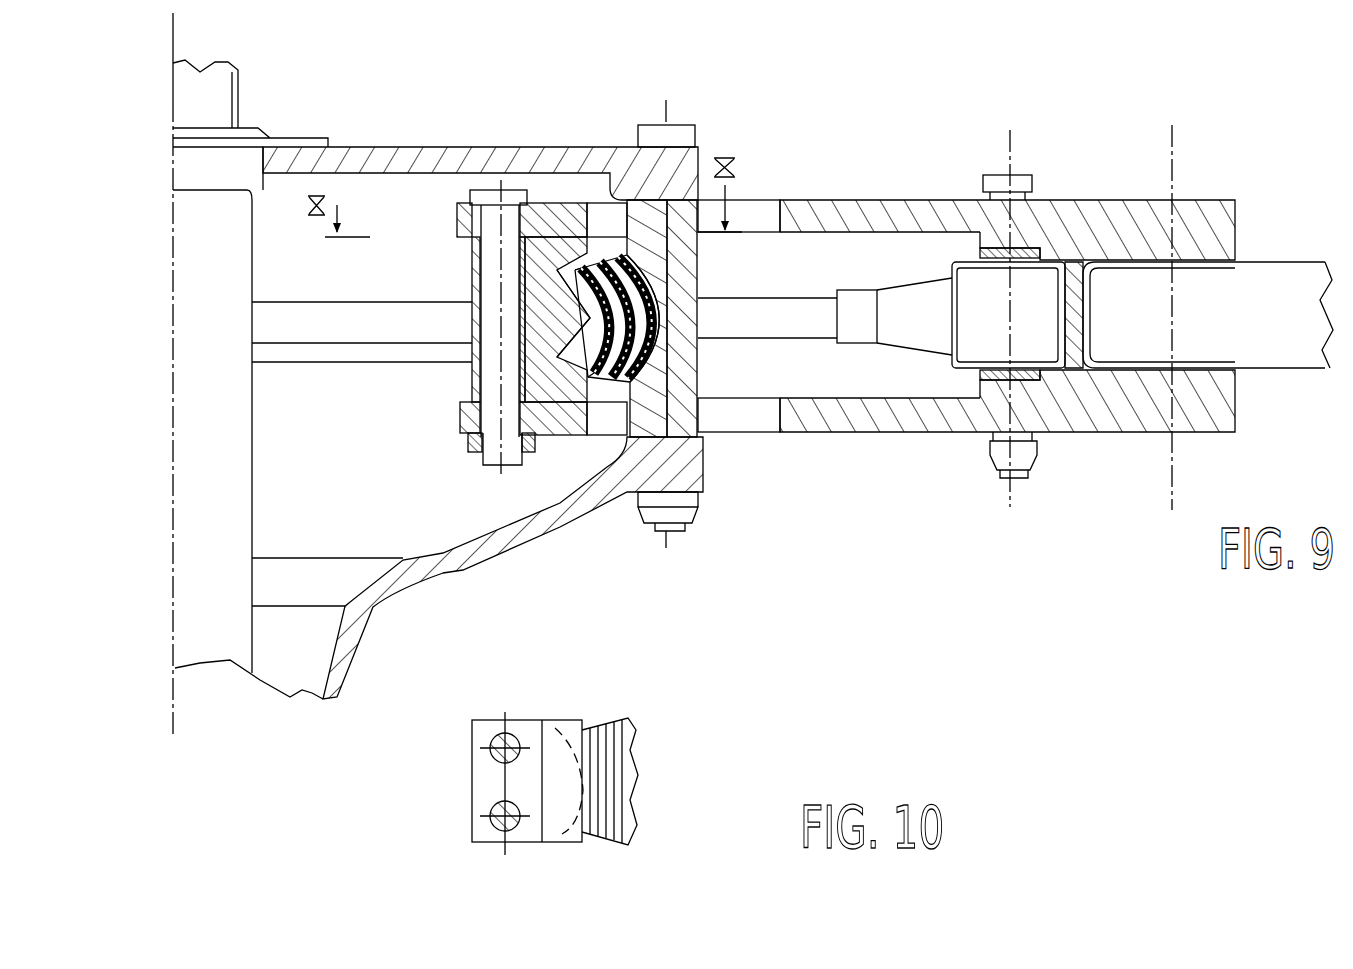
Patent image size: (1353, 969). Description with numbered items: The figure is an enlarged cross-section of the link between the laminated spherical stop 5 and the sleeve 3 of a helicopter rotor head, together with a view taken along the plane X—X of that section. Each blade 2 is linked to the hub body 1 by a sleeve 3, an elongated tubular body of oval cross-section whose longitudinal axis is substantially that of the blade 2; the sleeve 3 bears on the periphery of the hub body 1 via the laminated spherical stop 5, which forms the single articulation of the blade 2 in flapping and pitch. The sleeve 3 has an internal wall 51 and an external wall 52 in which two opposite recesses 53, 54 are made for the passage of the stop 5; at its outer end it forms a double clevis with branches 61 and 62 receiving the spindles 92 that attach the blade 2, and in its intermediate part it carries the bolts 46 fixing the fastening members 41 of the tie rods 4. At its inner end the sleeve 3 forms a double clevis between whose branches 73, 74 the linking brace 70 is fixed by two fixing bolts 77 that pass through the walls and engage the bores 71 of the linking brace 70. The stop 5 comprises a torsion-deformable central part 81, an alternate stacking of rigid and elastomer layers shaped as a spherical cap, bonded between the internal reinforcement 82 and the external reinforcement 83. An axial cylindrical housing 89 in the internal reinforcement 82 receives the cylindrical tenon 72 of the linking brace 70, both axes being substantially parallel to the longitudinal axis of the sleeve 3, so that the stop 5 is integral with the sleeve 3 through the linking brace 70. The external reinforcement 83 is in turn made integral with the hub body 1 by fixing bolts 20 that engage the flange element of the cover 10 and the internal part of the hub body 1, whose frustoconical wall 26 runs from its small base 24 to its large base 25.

In FIG. 9, the hub body 1 is at (545, 568).
In FIG. 9, the blade 2 is at (1275, 290).
In FIG. 9, the sleeve 3 is at (850, 198).
In FIG. 9, the tie rod 4 is at (795, 315).
In FIG. 9, the laminated spherical stop 5 is at (702, 275).
In FIG. 9, the cover 10 is at (412, 152).
In FIG. 9, the fixing bolt 20 is at (682, 126).
In FIG. 9, the small base 24 is at (440, 560).
In FIG. 9, the large base 25 is at (693, 462).
In FIG. 9, the wall 26 is at (495, 545).
In FIG. 9, the fastening member 41 is at (923, 327).
In FIG. 9, the bolt 46 is at (1020, 185).
In FIG. 9, the internal wall 51 is at (875, 410).
In FIG. 9, the external wall 52 is at (915, 215).
In FIG. 9, the recess 53 is at (770, 410).
In FIG. 9, the recess 54 is at (752, 215).
In FIG. 9, the branch 61 is at (1115, 400).
In FIG. 9, the branch 62 is at (1135, 228).
In FIG. 9, the linking brace 70 is at (468, 262).
In FIG. 10, the linking brace 70 is at (470, 786).
In FIG. 9, the bore 71 is at (465, 377).
In FIG. 9, the cylindrical tenon 72 is at (540, 300).
In FIG. 9, the branch 73 is at (455, 395).
In FIG. 9, the branch 74 is at (455, 237).
In FIG. 9, the fixing bolt 77 is at (475, 440).
In FIG. 10, the fixing bolt 77 is at (470, 750).
In FIG. 9, the central part 81 is at (625, 265).
In FIG. 9, the internal reinforcement 82 is at (623, 240).
In FIG. 10, the internal reinforcement 82 is at (632, 752).
In FIG. 9, the external reinforcement 83 is at (698, 380).
In FIG. 9, the axial cylindrical housing 89 is at (555, 325).
In FIG. 9, the spindle 92 is at (1172, 455).